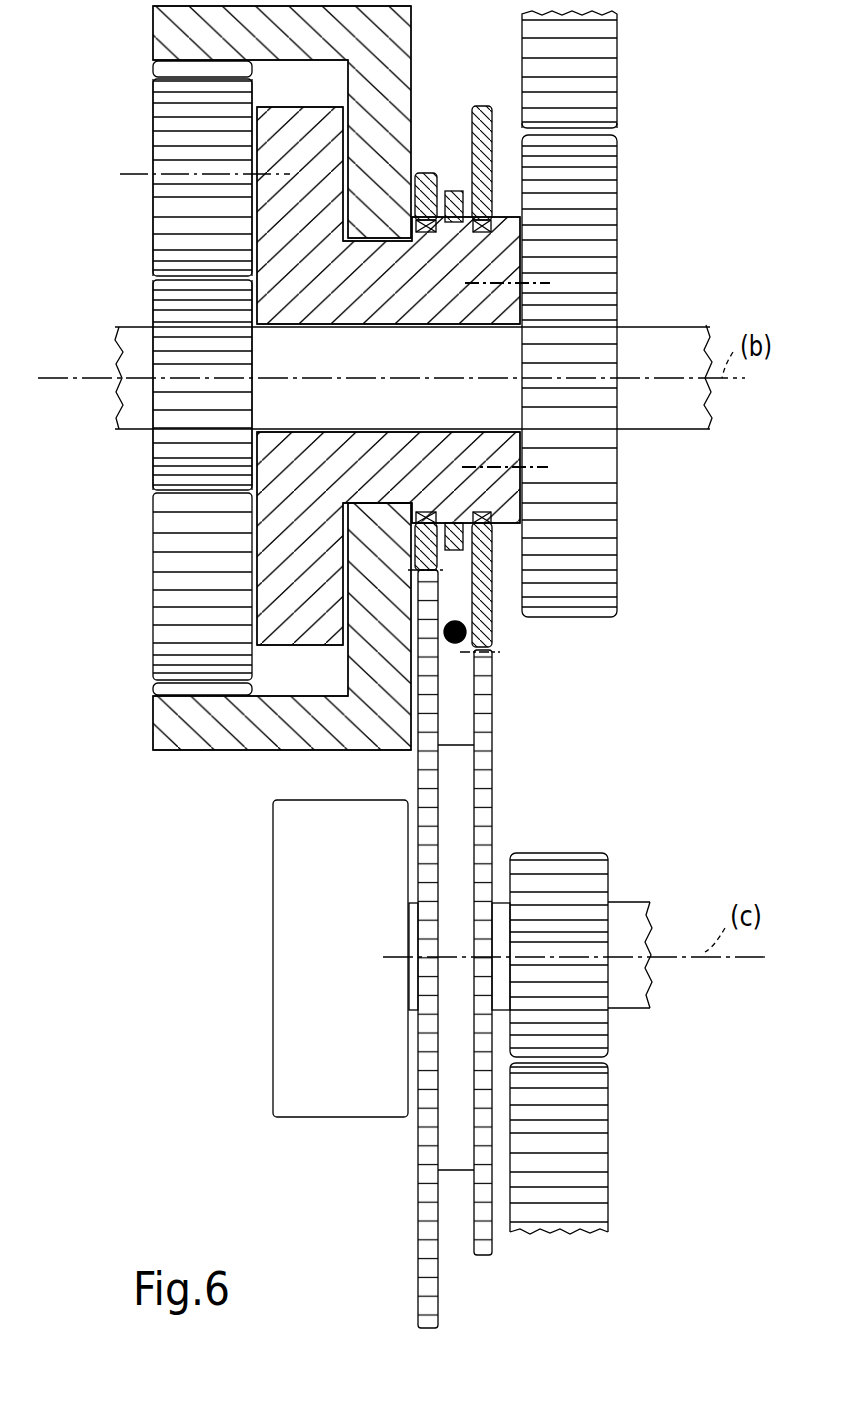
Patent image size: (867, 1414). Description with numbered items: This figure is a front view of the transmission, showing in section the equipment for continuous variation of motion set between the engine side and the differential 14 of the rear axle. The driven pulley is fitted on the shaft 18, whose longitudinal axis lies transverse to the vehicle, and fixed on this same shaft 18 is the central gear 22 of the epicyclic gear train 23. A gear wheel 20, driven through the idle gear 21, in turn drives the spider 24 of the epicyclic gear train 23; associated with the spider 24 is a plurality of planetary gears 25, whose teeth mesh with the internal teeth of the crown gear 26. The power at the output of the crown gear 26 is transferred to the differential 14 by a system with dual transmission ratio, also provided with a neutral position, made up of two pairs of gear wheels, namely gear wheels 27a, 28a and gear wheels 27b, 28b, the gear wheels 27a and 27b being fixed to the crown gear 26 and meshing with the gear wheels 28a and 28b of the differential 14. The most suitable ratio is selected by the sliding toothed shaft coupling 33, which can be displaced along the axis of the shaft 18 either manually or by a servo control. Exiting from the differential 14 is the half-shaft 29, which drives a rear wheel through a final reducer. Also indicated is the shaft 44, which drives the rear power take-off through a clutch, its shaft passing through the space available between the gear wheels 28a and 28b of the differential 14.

The differential 14 is at (282, 957).
The shaft 18 is at (670, 420).
The gear wheel 20 is at (605, 513).
The idle gear 21 is at (605, 85).
The central gear 22 is at (168, 437).
The epicyclic gear train 23 is at (138, 279).
The spider 24 is at (532, 268).
The planetary gears 25 is at (162, 193).
The crown gear 26 is at (190, 745).
The gear wheel 27a is at (490, 112).
The gear wheel 27b is at (425, 173).
The gear wheel 28a is at (488, 1255).
The gear wheel 28b is at (425, 1235).
The half-shaft 29 is at (632, 995).
The sliding toothed shaft coupling 33 is at (455, 191).
The shaft 44 is at (466, 632).